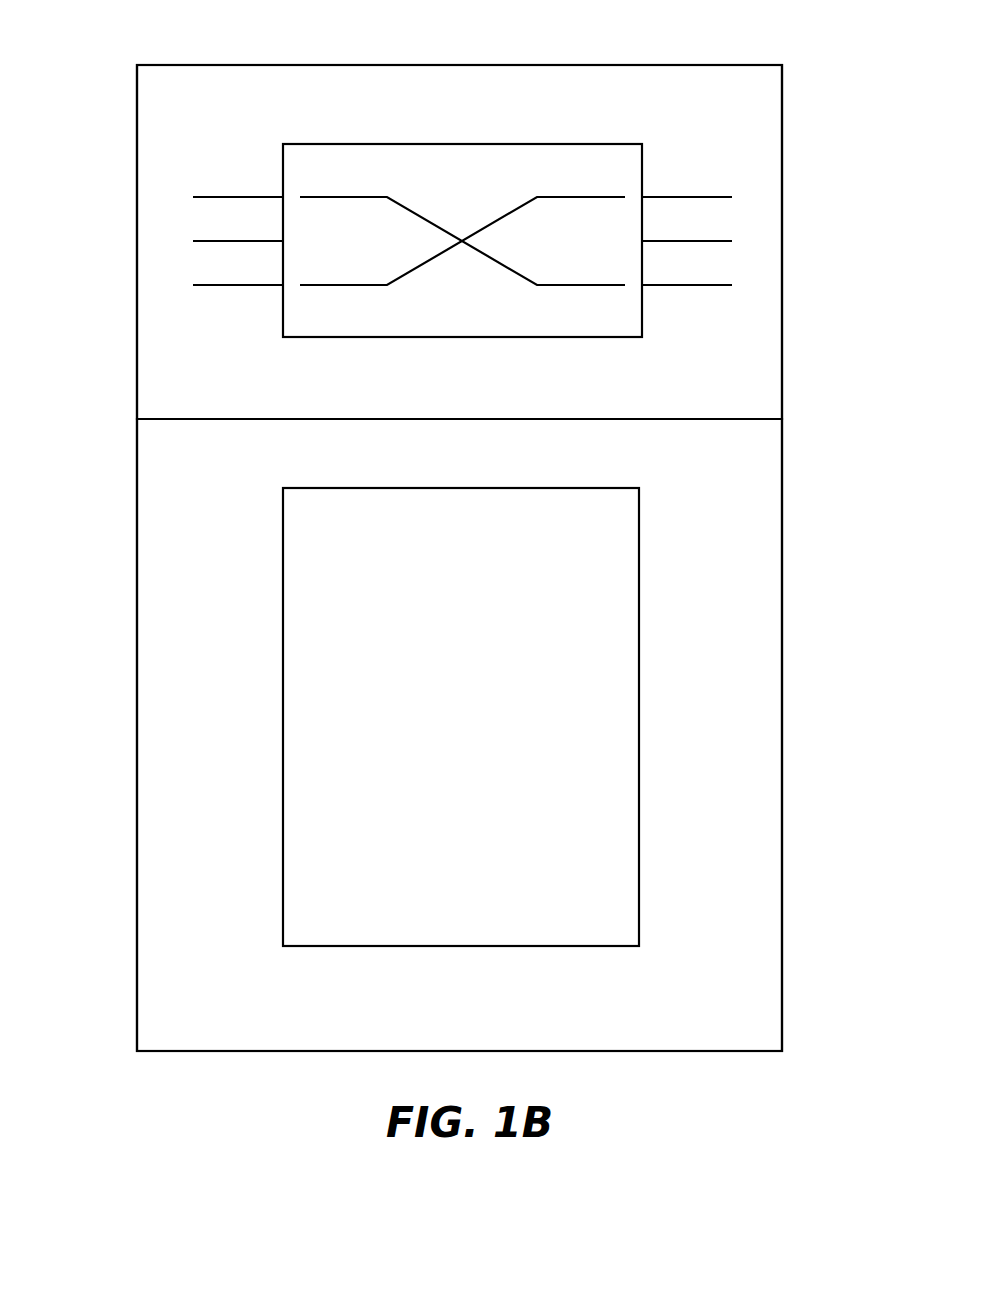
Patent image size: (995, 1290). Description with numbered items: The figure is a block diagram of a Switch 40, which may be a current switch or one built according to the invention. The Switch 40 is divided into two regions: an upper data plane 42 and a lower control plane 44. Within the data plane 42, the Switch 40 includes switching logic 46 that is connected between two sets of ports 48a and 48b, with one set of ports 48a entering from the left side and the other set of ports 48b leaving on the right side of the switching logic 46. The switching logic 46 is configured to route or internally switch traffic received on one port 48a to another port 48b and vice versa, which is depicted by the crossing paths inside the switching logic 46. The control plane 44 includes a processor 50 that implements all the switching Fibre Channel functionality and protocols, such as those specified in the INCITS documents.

The Switch 40 is at (108, 1020).
The data plane 42 is at (783, 172).
The control plane 44 is at (783, 680).
The switching logic 46 is at (478, 143).
The ports 48a is at (213, 275).
The ports 48b is at (713, 273).
The processor 50 is at (476, 727).